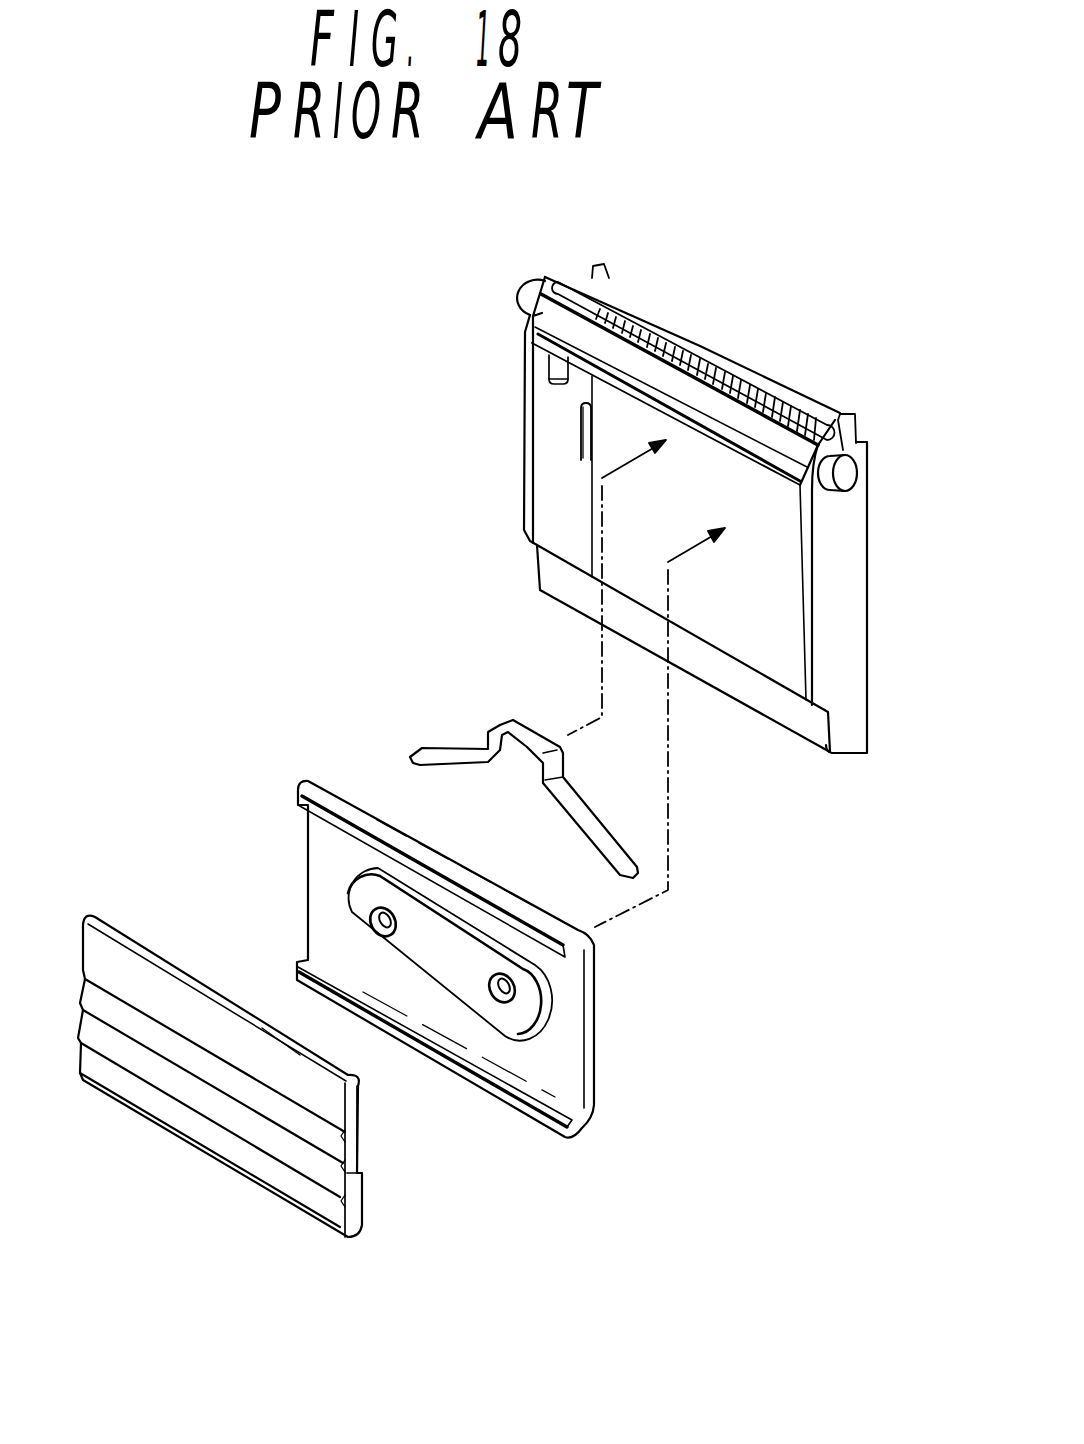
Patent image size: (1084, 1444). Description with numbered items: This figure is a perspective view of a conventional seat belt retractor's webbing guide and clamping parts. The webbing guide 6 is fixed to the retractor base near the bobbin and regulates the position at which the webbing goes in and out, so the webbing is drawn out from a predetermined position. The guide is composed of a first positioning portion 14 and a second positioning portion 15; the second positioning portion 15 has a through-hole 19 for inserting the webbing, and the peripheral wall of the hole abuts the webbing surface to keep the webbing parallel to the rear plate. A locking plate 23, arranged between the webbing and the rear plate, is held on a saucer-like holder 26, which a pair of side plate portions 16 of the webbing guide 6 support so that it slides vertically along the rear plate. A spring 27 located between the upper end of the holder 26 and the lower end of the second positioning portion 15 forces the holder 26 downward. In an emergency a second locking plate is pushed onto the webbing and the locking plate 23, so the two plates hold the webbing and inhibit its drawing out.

The webbing guide 6 is at (868, 481).
The second positioning portion 15 is at (570, 317).
The through-hole 19 is at (693, 353).
The side plate portions 16 is at (555, 432).
The first positioning portion 14 is at (568, 592).
The spring 27 is at (450, 753).
The holder 26 is at (595, 1040).
The locking plate 23 is at (307, 1195).